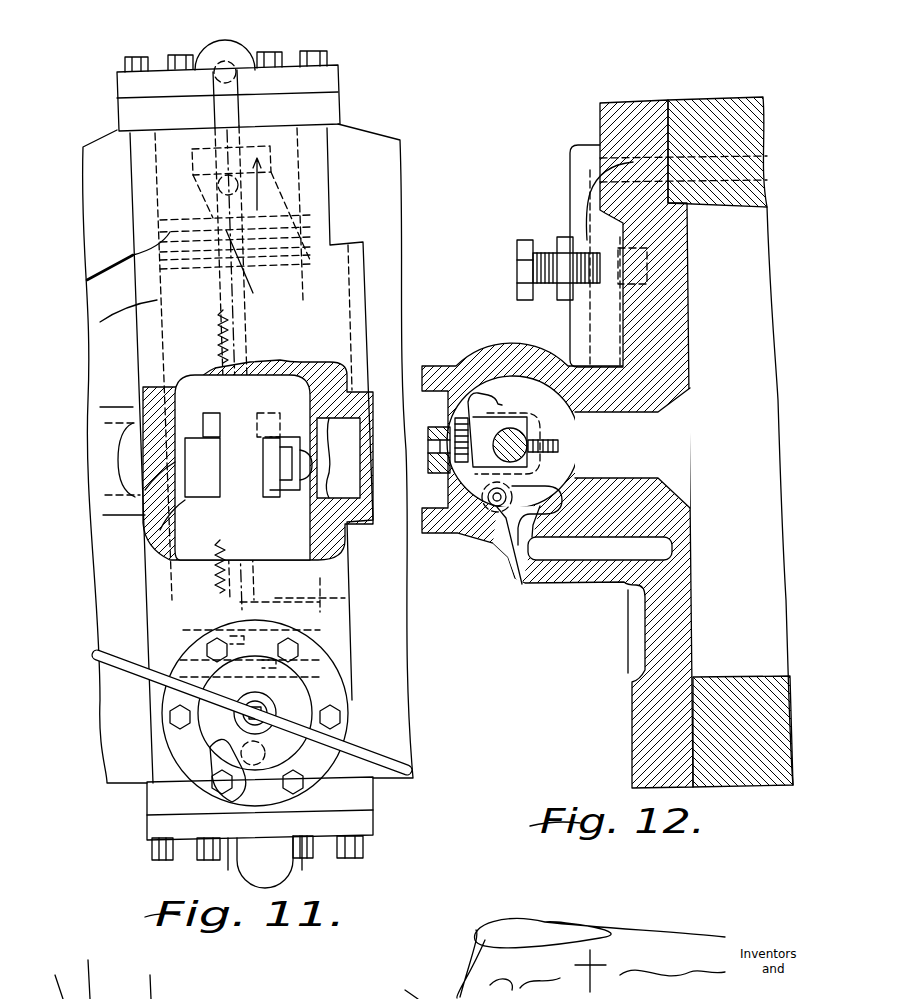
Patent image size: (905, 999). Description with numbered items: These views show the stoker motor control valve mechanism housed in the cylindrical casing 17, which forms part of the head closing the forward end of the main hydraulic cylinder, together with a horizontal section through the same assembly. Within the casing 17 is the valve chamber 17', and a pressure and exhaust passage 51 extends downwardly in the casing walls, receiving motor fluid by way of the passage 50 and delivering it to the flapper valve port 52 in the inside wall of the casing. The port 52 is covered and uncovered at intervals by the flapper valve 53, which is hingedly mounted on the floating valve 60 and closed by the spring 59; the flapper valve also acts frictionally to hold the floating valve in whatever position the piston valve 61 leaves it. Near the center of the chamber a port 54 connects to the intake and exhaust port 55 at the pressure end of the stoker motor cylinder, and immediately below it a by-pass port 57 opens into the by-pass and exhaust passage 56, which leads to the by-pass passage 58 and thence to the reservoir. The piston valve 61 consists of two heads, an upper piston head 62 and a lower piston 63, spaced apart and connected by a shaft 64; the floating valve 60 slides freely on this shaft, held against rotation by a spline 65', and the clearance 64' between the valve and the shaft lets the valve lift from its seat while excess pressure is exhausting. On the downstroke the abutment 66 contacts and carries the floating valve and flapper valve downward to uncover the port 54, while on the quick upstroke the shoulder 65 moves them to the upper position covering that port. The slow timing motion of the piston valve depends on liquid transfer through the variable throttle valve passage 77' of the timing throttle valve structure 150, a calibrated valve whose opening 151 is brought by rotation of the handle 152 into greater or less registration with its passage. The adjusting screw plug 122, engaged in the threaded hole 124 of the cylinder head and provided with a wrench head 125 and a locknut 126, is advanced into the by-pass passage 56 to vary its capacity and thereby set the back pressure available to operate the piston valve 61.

In FIG. 11, the passage 50 is at (237, 90).
In FIG. 11, the cylindrical casing 17 is at (99, 327).
In FIG. 11, the valve chamber 17' is at (366, 451).
In FIG. 11, the pressure and exhaust passage 51 is at (262, 332).
In FIG. 12, the pressure and exhaust passage 51 is at (607, 583).
In FIG. 11, the flapper valve port 52 is at (339, 458).
In FIG. 12, the flapper valve port 52 is at (523, 587).
In FIG. 11, the flapper valve 53 is at (283, 414).
In FIG. 12, the flapper valve 53 is at (505, 523).
In FIG. 11, the pressure and exhaust port 54 is at (203, 425).
In FIG. 12, the pressure and exhaust port 54 is at (615, 464).
In FIG. 12, the intake and exhaust port 55 is at (688, 482).
In FIG. 11, the by-pass and exhaust passage 56 is at (108, 457).
In FIG. 12, the by-pass and exhaust passage 56 is at (628, 102).
In FIG. 11, the by-pass port 57 is at (160, 530).
In FIG. 12, the by-pass port 57 is at (547, 540).
In FIG. 12, the by-pass passage 58 is at (703, 160).
In FIG. 11, the spring 59 is at (300, 492).
In FIG. 12, the spring 59 is at (465, 537).
In FIG. 11, the floating valve 60 is at (145, 490).
In FIG. 12, the floating valve 60 is at (540, 356).
In FIG. 11, the piston valve 61 is at (162, 197).
In FIG. 11, the upper piston head 62 is at (175, 270).
In FIG. 11, the lower piston 63 is at (195, 632).
In FIG. 11, the shaft 64 is at (313, 582).
In FIG. 12, the shaft 64 is at (532, 454).
In FIG. 12, the clearance 64' is at (544, 433).
In FIG. 11, the shoulder 65 is at (337, 597).
In FIG. 11, the spline 65' is at (275, 401).
In FIG. 12, the spline 65' is at (573, 449).
In FIG. 11, the abutment 66 is at (223, 318).
In FIG. 11, the variable throttle valve passage 77' is at (257, 849).
In FIG. 12, the adjusting screw plug 122 is at (520, 270).
In FIG. 12, the threaded hole 124 is at (565, 236).
In FIG. 12, the head 125 is at (522, 242).
In FIG. 12, the locknut 126 is at (570, 237).
In FIG. 11, the timing throttle valve structure 150 is at (260, 808).
In FIG. 11, the opening 151 is at (210, 747).
In FIG. 11, the handle 152 is at (407, 760).